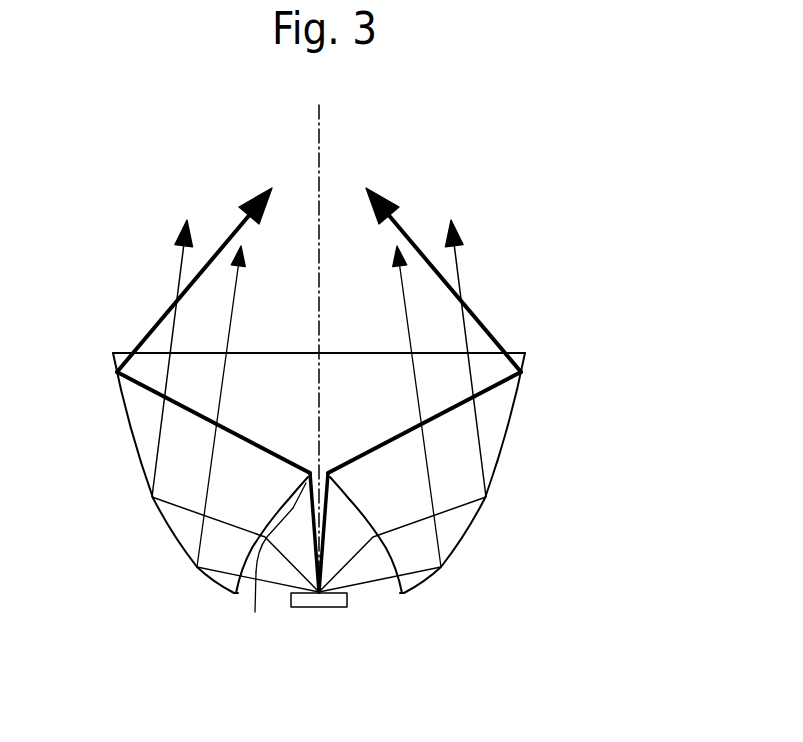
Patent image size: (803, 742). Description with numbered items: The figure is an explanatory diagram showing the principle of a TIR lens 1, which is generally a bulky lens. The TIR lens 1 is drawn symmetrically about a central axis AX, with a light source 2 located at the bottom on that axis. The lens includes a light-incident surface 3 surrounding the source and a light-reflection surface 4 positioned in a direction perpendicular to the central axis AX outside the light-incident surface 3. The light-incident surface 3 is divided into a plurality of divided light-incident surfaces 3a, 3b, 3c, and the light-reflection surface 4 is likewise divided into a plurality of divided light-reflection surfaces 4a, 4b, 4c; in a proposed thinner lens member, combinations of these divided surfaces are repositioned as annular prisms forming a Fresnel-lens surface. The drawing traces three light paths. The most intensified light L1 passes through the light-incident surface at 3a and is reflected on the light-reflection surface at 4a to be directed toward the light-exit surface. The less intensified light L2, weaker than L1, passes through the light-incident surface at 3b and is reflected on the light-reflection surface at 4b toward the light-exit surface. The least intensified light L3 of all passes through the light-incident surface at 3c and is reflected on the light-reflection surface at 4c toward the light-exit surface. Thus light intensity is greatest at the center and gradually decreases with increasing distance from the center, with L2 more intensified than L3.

The central axis AX is at (320, 122).
The TIR lens 1 is at (347, 526).
The light source (LED) 2 is at (319, 607).
The light-incident surface 3 is at (309, 586).
The divided light-incident surface 3a is at (297, 500).
The divided light-incident surface 3b is at (240, 576).
The divided light-incident surface 3c is at (255, 612).
The light-reflection surface 4 is at (459, 540).
The divided light-reflection surface 4a is at (128, 478).
The divided light-reflection surface 4b is at (128, 478).
The divided light-reflection surface 4c is at (222, 603).
The most intensified light L1 is at (228, 233).
The less intensified light L2 is at (182, 253).
The least intensified light L3 is at (234, 299).